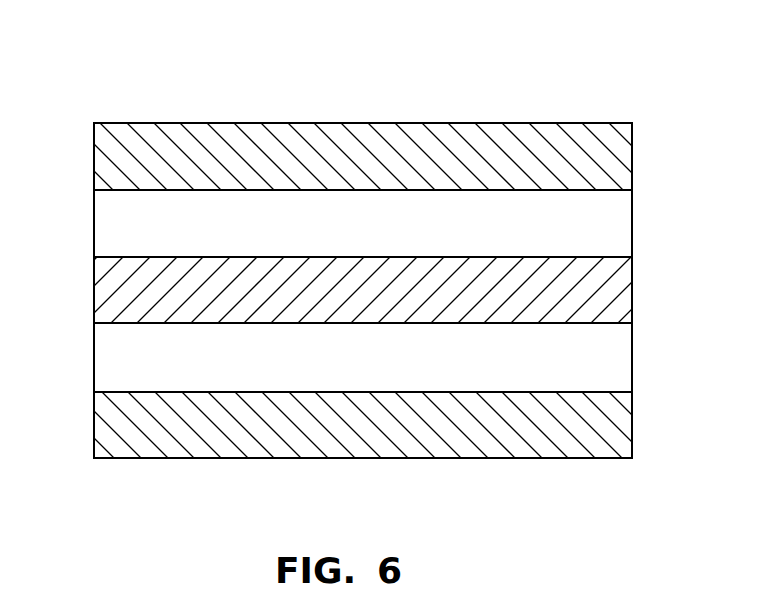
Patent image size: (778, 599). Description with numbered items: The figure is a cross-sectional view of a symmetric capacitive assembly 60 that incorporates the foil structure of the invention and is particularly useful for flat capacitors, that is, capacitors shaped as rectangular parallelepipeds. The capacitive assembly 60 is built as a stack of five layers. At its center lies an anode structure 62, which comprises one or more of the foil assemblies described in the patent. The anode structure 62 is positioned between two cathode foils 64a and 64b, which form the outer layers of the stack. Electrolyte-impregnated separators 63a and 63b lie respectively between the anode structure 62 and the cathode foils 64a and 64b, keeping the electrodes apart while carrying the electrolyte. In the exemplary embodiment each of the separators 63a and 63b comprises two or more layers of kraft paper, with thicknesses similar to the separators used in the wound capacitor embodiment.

The capacitive assembly 60 is at (662, 91).
The anode structure 62 is at (633, 300).
The separator 63a is at (93, 228).
The separator 63b is at (93, 360).
The cathode foil 64a is at (412, 123).
The cathode foil 64b is at (286, 459).